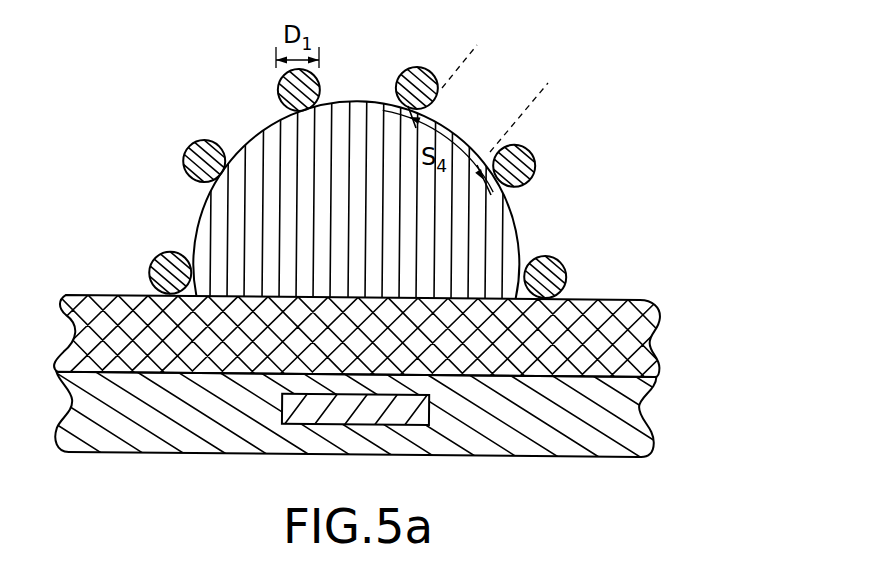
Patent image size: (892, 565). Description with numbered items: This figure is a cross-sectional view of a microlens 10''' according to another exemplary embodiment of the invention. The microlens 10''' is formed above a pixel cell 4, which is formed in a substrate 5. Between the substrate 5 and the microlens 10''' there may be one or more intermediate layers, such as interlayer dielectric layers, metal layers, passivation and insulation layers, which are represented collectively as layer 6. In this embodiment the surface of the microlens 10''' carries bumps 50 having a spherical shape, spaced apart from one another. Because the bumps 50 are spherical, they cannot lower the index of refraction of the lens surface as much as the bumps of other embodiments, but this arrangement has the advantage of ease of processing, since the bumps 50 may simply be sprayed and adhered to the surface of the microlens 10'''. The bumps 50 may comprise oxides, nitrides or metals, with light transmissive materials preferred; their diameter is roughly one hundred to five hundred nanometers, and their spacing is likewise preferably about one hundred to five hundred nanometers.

The bumps 50 is at (420, 82).
The microlens 10''' is at (431, 197).
The layer 6 is at (632, 360).
The substrate 5 is at (622, 422).
The pixel cell 4 is at (380, 417).